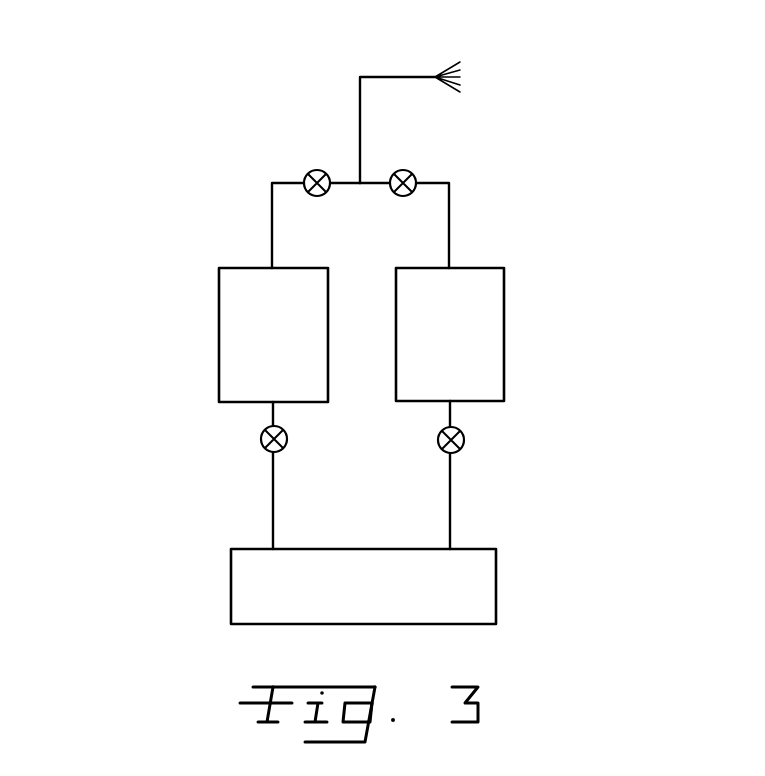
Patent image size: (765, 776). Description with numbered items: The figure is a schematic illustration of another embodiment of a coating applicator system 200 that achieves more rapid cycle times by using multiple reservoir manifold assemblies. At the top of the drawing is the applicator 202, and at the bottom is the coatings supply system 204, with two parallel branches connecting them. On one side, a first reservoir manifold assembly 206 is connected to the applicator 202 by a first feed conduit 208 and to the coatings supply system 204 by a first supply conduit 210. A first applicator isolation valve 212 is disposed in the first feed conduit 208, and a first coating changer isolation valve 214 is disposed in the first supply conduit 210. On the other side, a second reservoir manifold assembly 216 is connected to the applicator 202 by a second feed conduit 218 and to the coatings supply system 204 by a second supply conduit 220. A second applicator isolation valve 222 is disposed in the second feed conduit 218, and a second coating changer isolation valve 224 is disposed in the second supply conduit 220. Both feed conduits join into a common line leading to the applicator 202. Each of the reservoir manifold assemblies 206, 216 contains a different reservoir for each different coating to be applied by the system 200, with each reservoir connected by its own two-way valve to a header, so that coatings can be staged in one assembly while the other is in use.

The applicator system 200 is at (170, 112).
The applicator 202 is at (403, 77).
The coatings supply system 204 is at (480, 598).
The first reservoir manifold assembly 206 is at (227, 335).
The first feed conduit 208 is at (270, 219).
The first supply conduit 210 is at (273, 507).
The first applicator isolation valve 212 is at (318, 170).
The first coating changer isolation valve 214 is at (260, 443).
The second reservoir manifold assembly 216 is at (497, 327).
The second feed conduit 218 is at (452, 213).
The second supply conduit 220 is at (452, 510).
The second applicator isolation valve 222 is at (405, 170).
The second coating changer isolation valve 224 is at (462, 440).